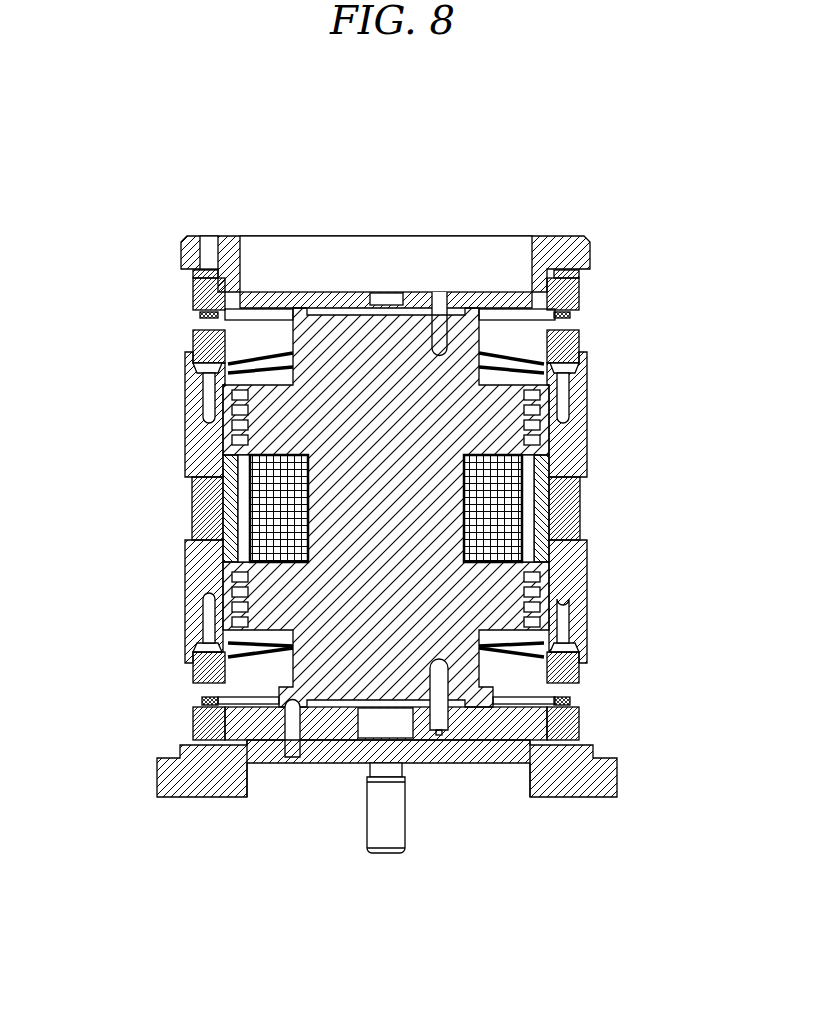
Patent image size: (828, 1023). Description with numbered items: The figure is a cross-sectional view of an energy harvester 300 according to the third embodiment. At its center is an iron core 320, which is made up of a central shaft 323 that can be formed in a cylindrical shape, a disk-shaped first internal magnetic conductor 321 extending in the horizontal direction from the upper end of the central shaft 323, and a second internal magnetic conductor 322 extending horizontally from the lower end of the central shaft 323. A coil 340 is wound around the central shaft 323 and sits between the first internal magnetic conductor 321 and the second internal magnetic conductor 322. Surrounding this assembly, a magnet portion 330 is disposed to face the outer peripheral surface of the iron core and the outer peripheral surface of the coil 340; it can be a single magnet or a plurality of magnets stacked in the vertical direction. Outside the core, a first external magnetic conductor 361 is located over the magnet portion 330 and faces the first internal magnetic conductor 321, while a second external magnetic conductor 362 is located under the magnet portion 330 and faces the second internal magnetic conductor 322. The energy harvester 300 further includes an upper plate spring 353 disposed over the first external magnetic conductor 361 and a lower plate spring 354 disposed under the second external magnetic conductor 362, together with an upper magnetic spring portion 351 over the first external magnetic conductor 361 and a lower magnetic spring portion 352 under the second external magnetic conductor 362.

The energy harvester 300 is at (436, 143).
The iron core 320 is at (344, 708).
The first internal magnetic conductor 321 is at (197, 369).
The second internal magnetic conductor 322 is at (205, 614).
The central shaft 323 is at (390, 495).
The magnet portion 330 is at (190, 523).
The coil 340 is at (580, 500).
The upper magnetic spring portion 351 is at (580, 342).
The lower magnetic spring portion 352 is at (580, 712).
The upper plate spring 353 is at (193, 343).
The lower plate spring 354 is at (193, 680).
The first external magnetic conductor 361 is at (190, 424).
The second external magnetic conductor 362 is at (190, 578).